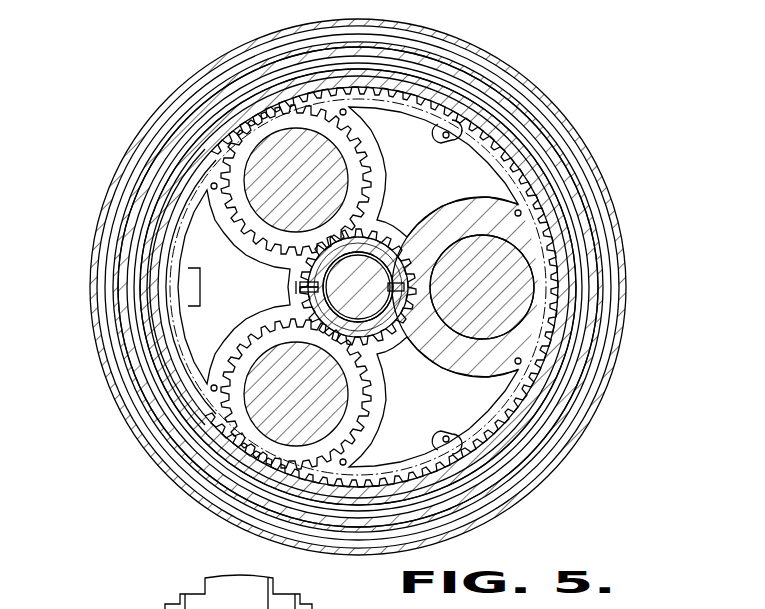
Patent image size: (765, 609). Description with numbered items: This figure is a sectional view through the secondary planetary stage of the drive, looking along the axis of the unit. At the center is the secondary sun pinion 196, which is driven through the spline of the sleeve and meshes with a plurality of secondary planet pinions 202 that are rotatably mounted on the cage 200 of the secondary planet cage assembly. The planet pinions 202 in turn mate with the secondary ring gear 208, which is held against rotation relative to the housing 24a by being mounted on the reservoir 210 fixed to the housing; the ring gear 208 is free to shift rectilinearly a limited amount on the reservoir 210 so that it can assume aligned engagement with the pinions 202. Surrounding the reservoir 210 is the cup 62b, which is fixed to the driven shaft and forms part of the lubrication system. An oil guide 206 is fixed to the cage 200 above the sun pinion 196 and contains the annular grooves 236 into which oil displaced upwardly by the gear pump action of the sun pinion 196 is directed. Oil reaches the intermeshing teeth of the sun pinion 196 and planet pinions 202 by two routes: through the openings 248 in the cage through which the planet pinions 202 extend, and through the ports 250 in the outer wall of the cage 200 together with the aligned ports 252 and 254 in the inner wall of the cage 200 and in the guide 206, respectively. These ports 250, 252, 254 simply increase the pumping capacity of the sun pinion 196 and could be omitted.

The housing 24a is at (622, 312).
The cup 62b is at (584, 382).
The secondary sun pinion 196 is at (378, 243).
The cage 200 is at (183, 230).
The secondary planet pinions 202 is at (263, 116).
The oil guide 206 is at (302, 270).
The secondary ring gear 208 is at (214, 440).
The reservoir 210 is at (596, 342).
The annular grooves 236 is at (400, 262).
The openings 248 is at (215, 168).
The ports 250 is at (196, 288).
The ports 252 is at (305, 296).
The ports 254 is at (300, 288).